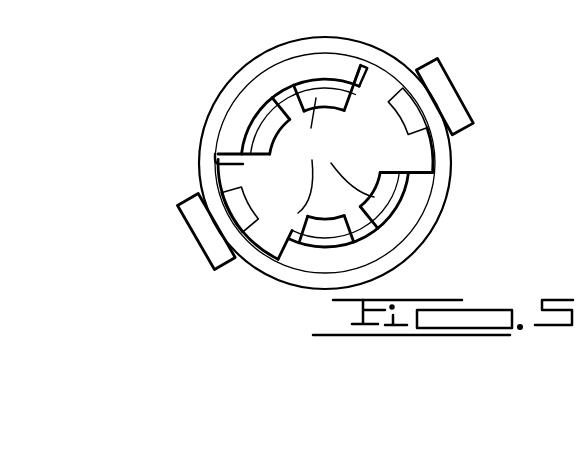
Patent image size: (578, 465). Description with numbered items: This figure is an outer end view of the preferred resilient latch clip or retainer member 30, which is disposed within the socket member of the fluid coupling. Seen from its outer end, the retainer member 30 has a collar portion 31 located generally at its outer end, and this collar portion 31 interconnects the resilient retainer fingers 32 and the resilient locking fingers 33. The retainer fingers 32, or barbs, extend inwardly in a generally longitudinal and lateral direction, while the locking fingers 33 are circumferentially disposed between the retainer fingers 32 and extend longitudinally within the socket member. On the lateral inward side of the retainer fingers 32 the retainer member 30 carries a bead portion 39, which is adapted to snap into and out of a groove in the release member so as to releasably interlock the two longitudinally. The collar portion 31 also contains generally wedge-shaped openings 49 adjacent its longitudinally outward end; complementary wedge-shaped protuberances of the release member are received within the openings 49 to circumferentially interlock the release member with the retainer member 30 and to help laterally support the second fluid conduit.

The retainer member 30 is at (458, 158).
The collar portion 31 is at (437, 208).
The retainer fingers 32 is at (272, 147).
The locking fingers 33 is at (410, 115).
The bead portion 39 is at (320, 90).
The wedge-shaped openings 49 is at (371, 73).